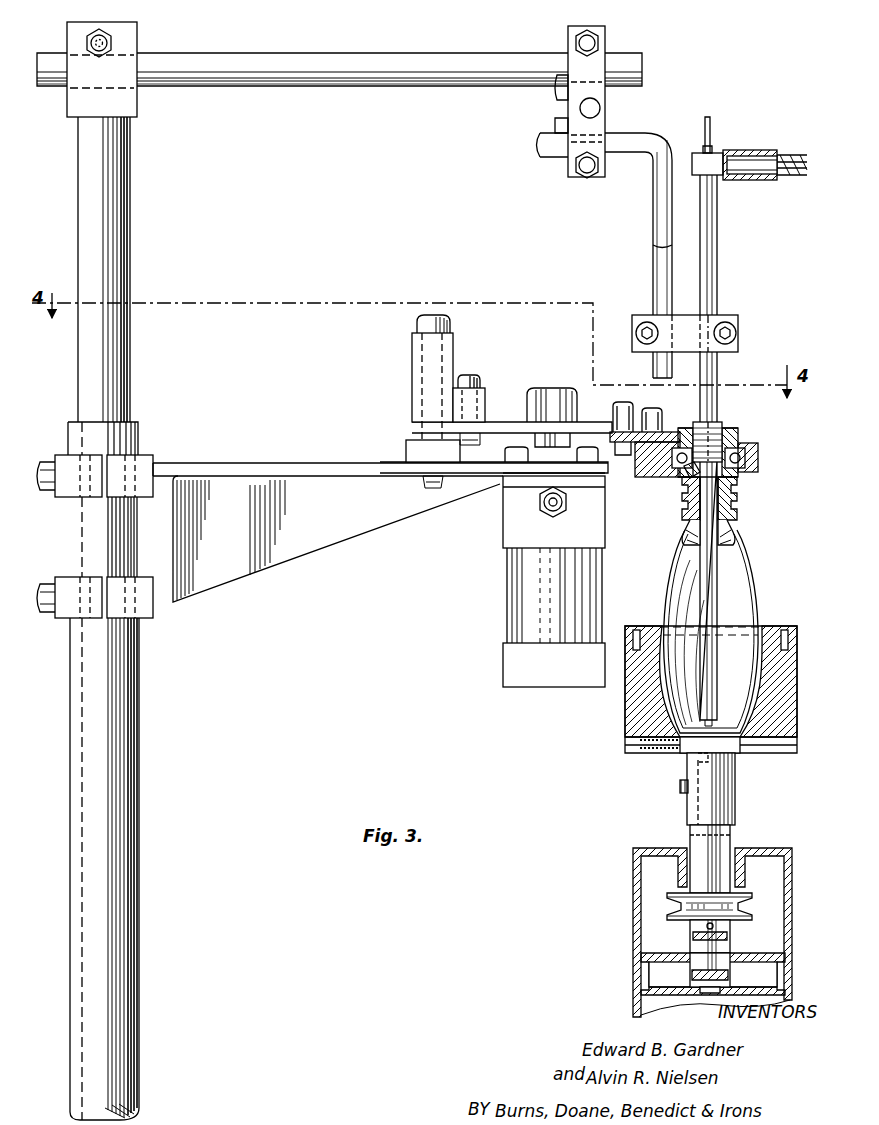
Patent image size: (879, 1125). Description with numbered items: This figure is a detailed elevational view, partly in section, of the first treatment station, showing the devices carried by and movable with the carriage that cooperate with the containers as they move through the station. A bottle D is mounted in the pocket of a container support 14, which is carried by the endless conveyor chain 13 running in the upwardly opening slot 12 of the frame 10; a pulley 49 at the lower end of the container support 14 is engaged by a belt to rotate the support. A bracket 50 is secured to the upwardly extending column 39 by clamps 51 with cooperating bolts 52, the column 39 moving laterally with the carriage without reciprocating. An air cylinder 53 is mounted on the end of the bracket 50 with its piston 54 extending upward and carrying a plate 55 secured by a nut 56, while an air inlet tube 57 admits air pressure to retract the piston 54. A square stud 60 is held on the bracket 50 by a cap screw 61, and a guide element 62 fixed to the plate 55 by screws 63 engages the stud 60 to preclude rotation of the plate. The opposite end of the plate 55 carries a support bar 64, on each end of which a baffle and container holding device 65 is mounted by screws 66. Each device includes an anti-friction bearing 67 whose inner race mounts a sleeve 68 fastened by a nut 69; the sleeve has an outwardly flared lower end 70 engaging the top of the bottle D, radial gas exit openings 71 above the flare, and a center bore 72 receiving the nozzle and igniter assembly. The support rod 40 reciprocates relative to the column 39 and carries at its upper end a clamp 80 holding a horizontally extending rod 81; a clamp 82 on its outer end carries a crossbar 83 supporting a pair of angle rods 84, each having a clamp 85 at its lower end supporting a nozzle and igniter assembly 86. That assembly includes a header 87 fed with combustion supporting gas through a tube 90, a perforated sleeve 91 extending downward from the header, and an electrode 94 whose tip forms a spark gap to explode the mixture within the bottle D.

The rectangular frame 10 is at (631, 890).
The upwardly opening slot 12 is at (690, 842).
The endless conveyor chain 13 is at (696, 963).
The container support 14 is at (684, 772).
The column 39 is at (140, 795).
The support rod 40 is at (131, 204).
The pulley 49 is at (694, 918).
The bracket 50 is at (285, 463).
The clamp 51 is at (55, 577).
The bolt 52 is at (46, 462).
The air cylinder 53 is at (503, 582).
The piston 54 is at (536, 442).
The plate 55 is at (598, 432).
The nut 56 is at (550, 390).
The air inlet tube 57 is at (541, 502).
The square stud 60 is at (412, 350).
The cap screw 61 is at (432, 315).
The guide element 62 is at (485, 395).
The screw 63 is at (470, 375).
The support bar 64 is at (680, 440).
The baffle and container holding device 65 is at (762, 454).
The screw 66 is at (655, 414).
The anti-friction bearing 67 is at (740, 445).
The sleeve 68 is at (738, 507).
The nut 69 is at (716, 428).
The outwardly flared lower end 70 is at (735, 522).
The radial gas exit opening 71 is at (740, 484).
The center bore 72 is at (690, 474).
The clamp 80 is at (138, 36).
The horizontally extending rod 81 is at (356, 53).
The clamp 82 is at (568, 28).
The crossbar 83 is at (600, 108).
The angle rod 84 is at (652, 208).
The clamp 85 is at (735, 315).
The nozzle and igniter assembly 86 is at (721, 372).
The header 87 is at (697, 153).
The tube 90 is at (760, 152).
The sleeve 91 is at (717, 242).
The electrode 94 is at (711, 131).
The bottle D is at (760, 587).